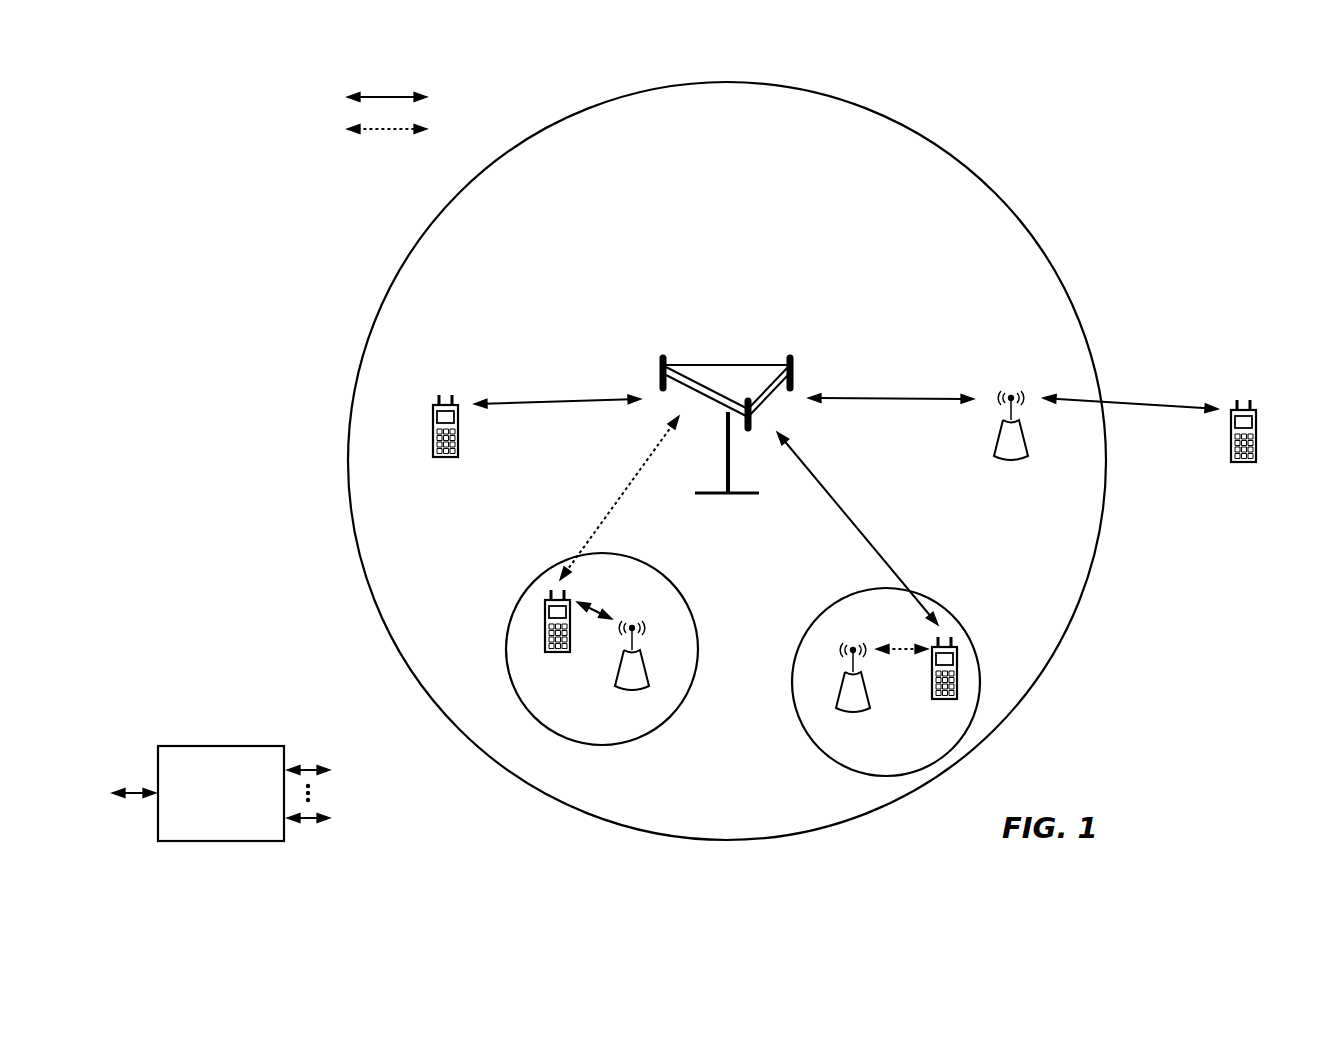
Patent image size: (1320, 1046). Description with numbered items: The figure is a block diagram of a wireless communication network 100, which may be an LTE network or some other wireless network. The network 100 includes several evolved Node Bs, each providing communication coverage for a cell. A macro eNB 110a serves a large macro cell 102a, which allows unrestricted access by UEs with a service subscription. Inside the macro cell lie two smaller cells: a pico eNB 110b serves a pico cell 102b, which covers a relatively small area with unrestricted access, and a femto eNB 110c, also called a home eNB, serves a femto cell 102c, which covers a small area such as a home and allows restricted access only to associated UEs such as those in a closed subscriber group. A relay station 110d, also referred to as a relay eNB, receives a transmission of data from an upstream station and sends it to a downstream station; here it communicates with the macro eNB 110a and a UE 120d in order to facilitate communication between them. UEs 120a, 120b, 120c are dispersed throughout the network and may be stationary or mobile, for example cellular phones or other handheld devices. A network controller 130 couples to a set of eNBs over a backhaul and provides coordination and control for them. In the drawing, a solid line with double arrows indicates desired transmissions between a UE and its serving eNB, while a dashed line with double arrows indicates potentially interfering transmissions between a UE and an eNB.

The wireless communication network 100 is at (704, 461).
The macro cell 102a is at (978, 178).
The pico cell 102b is at (682, 572).
The femto cell 102c is at (814, 622).
The macro eNB 110a is at (722, 365).
The pico eNB 110b is at (648, 676).
The femto eNB 110c is at (840, 700).
The relay station 110d is at (1011, 396).
The UE 120a is at (432, 414).
The UE 120b is at (545, 646).
The UE 120c is at (931, 694).
The UE 120d is at (1257, 422).
The network controller 130 is at (216, 746).